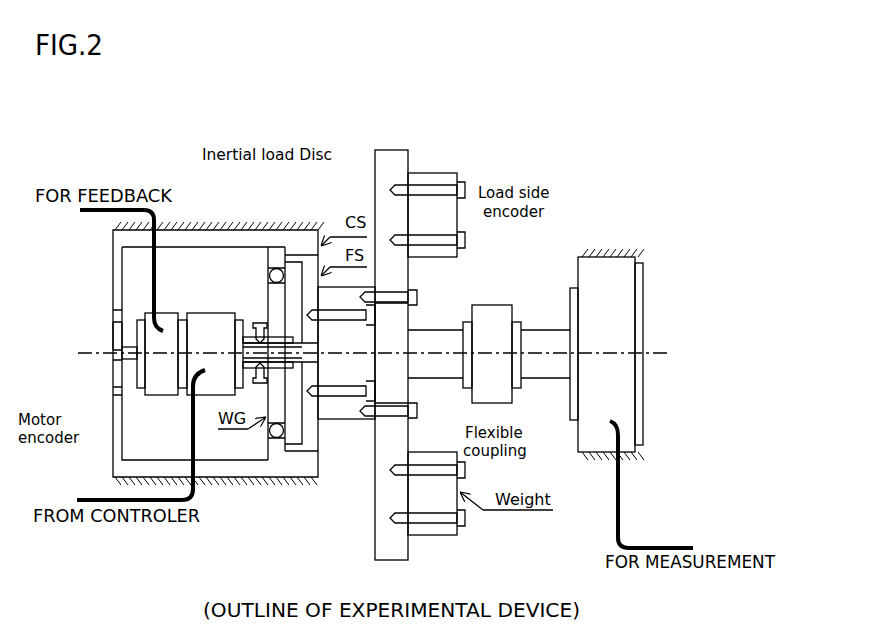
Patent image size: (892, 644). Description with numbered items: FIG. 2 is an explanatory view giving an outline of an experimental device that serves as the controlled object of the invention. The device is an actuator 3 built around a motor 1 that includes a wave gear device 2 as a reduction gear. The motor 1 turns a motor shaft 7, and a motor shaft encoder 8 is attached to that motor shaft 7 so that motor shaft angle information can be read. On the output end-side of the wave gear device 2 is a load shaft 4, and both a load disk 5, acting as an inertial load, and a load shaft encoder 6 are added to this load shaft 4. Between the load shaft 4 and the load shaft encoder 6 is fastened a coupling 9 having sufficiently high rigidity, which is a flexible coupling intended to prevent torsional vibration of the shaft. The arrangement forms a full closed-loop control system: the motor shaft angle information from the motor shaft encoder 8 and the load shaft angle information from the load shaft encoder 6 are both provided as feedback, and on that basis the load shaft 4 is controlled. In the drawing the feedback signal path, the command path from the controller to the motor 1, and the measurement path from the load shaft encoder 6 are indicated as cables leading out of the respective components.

The motor 1 is at (220, 312).
The wave gear device 2 is at (264, 264).
The actuator 3 is at (196, 216).
The load shaft 4 is at (433, 330).
The load disk 5 is at (364, 183).
The load shaft encoder 6 is at (577, 273).
The motor shaft 7 is at (132, 342).
The motor shaft encoder 8 is at (163, 393).
The coupling 9 is at (507, 402).